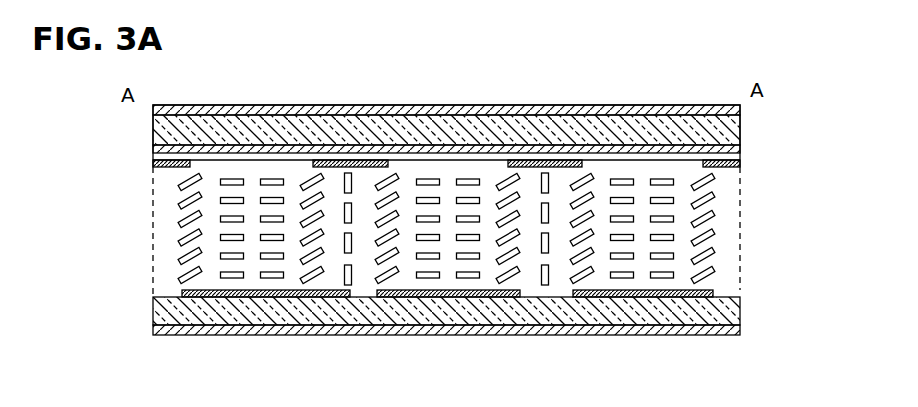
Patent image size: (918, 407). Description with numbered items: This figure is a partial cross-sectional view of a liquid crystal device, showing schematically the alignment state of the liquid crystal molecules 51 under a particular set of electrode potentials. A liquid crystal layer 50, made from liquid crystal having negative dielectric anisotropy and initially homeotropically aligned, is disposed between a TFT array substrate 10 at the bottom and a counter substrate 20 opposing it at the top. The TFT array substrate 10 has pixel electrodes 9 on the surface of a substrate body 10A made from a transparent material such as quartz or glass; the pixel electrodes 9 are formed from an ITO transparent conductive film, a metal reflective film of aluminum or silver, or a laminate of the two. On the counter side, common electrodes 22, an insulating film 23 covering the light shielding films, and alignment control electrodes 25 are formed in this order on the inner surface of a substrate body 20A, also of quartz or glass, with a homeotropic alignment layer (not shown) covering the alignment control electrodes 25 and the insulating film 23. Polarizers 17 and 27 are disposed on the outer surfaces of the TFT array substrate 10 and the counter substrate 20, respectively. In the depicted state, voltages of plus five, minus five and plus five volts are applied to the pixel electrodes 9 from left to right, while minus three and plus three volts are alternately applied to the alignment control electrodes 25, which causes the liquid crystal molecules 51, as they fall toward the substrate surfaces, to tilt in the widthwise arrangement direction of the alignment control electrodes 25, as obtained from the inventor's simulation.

The counter substrate 20 is at (455, 110).
The polarizer 27 is at (677, 105).
The substrate body 20A is at (733, 130).
The common electrodes 22 is at (740, 149).
The insulating film 23 is at (740, 160).
The alignment control electrodes 25 is at (551, 162).
The liquid crystal layer 50 is at (447, 231).
The liquid crystal molecules 51 is at (185, 218).
The TFT array substrate 10 is at (456, 340).
The pixel electrodes 9 is at (633, 295).
The substrate body 10A is at (740, 308).
The polarizer 17 is at (720, 335).